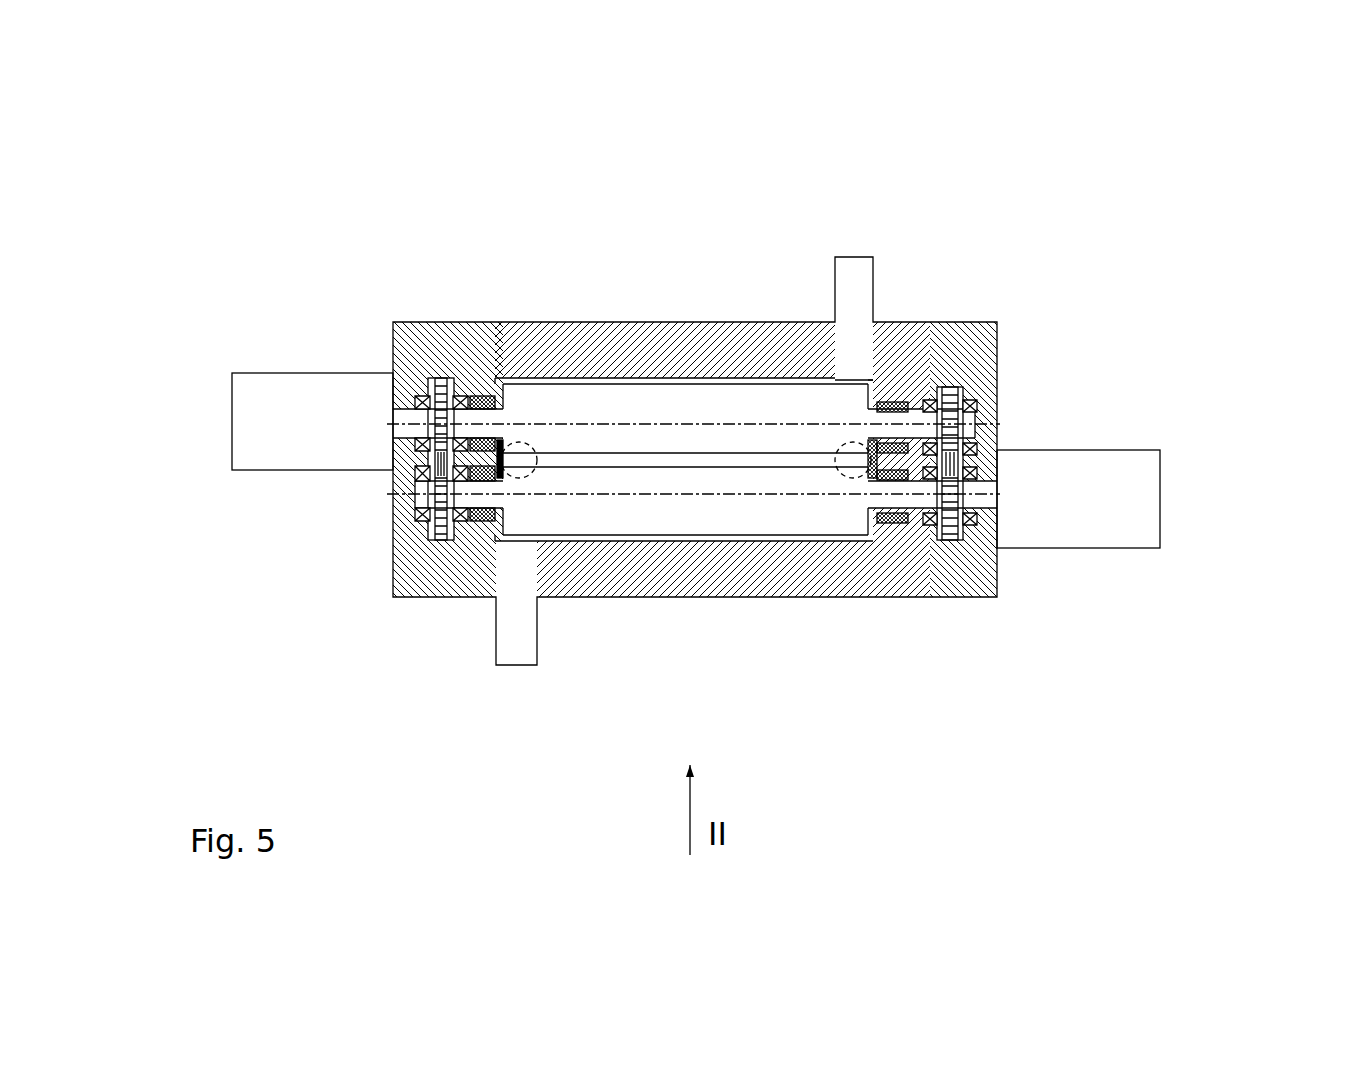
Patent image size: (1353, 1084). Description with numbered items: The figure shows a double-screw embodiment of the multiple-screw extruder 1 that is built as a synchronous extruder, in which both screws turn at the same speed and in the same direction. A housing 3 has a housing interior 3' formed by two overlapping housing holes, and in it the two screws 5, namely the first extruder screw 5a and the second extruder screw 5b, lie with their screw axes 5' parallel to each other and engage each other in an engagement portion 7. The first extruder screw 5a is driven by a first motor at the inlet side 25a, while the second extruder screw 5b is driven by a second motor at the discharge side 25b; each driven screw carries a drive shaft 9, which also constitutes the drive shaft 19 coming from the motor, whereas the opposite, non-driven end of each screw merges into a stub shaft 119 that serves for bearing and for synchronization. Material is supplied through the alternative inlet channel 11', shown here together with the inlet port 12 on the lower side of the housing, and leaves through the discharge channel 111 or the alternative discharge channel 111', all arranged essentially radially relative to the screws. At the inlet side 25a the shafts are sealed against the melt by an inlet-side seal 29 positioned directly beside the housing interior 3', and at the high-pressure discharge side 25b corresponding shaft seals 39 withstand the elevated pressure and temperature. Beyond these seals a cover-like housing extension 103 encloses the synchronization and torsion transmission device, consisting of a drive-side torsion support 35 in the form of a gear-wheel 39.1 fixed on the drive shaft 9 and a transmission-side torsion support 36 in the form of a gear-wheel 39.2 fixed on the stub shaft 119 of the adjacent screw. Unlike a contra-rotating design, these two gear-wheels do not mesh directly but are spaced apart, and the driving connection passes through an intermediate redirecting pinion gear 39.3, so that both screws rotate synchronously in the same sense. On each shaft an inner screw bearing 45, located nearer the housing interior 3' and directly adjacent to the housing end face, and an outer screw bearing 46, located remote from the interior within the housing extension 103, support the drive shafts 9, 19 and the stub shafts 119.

The multiple-screw extruder 1 is at (706, 462).
The housing 3 is at (665, 273).
The housing interior 3' is at (685, 366).
The screws 5 is at (684, 432).
The first extruder screw 5a is at (632, 402).
The second extruder screw 5b is at (779, 517).
The screw axes 5' is at (693, 571).
The engagement portion 7 is at (605, 462).
The drive shaft 9 is at (418, 422).
The alternative inlet channel 11' is at (559, 580).
The inlet 12 is at (518, 637).
The drive shaft 19 is at (477, 420).
The inlet side 25a is at (325, 608).
The discharge side 25b is at (1007, 372).
The inlet-side seal 29 is at (492, 460).
The drive-side torsion support 35 is at (438, 395).
The transmission-side torsion support 36 is at (438, 535).
The shaft seals 39 is at (902, 456).
The gear-wheel 39.1 is at (448, 412).
The gear-wheel 39.2 is at (443, 497).
The redirecting pinion gear 39.3 is at (953, 462).
The inner screw bearings 45 is at (460, 395).
The outer screw bearings 46 is at (402, 375).
The housing extension 103 is at (417, 395).
The discharge channel 111 is at (867, 262).
The alternative discharge channel 111' is at (813, 313).
The stub shaft 119 is at (417, 495).